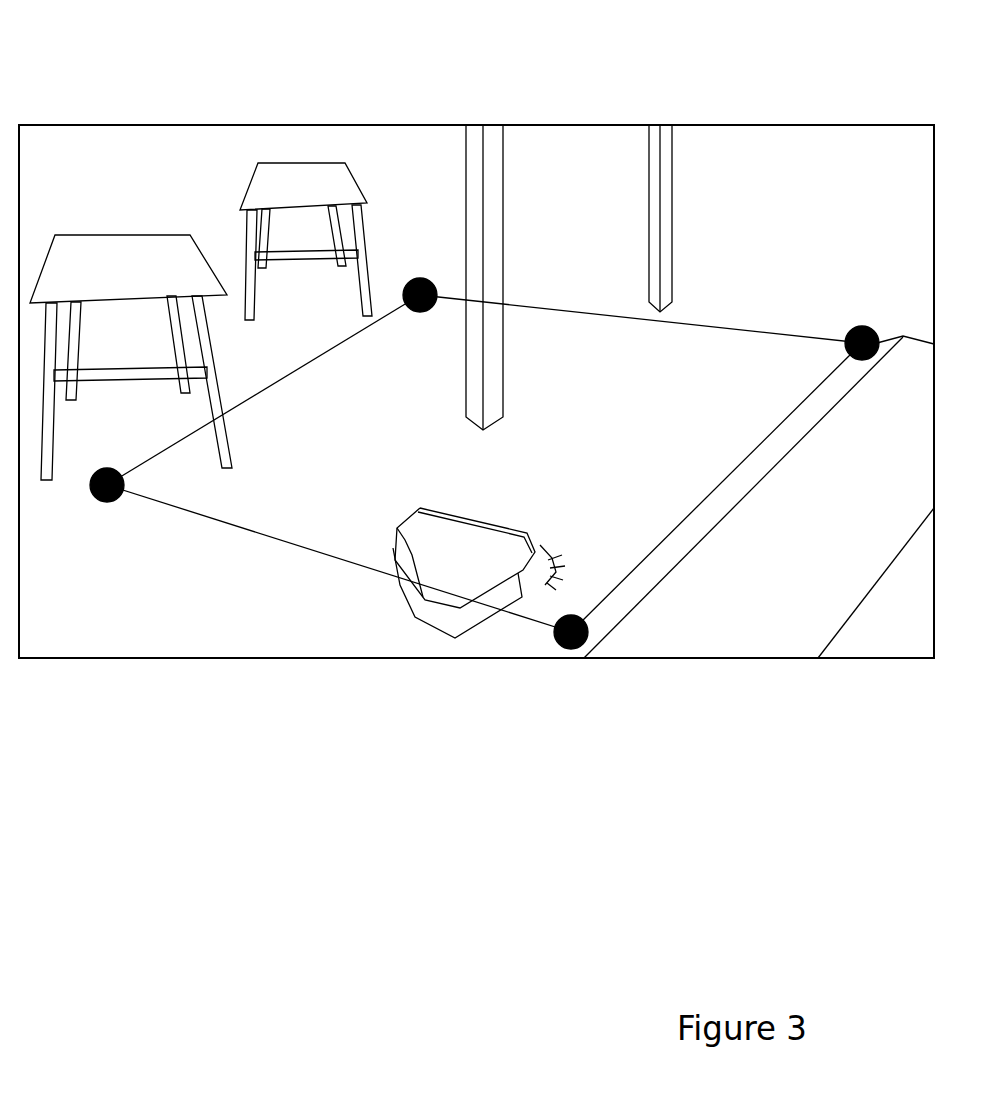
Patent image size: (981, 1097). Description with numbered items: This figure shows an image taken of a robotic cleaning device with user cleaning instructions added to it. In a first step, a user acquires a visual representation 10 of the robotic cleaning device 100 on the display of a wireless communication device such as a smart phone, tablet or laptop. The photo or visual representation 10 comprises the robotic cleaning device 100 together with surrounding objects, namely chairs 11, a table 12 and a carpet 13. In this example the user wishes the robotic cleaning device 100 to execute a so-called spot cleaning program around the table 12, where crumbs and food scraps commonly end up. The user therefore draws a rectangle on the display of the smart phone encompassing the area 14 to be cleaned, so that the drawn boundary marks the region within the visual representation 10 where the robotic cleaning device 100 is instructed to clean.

The visual representation 10 is at (348, 100).
The chairs 11 is at (127, 255).
The table 12 is at (492, 232).
The carpet 13 is at (790, 640).
The area to be cleaned 14 is at (352, 378).
The robotic cleaning device 100 is at (418, 527).